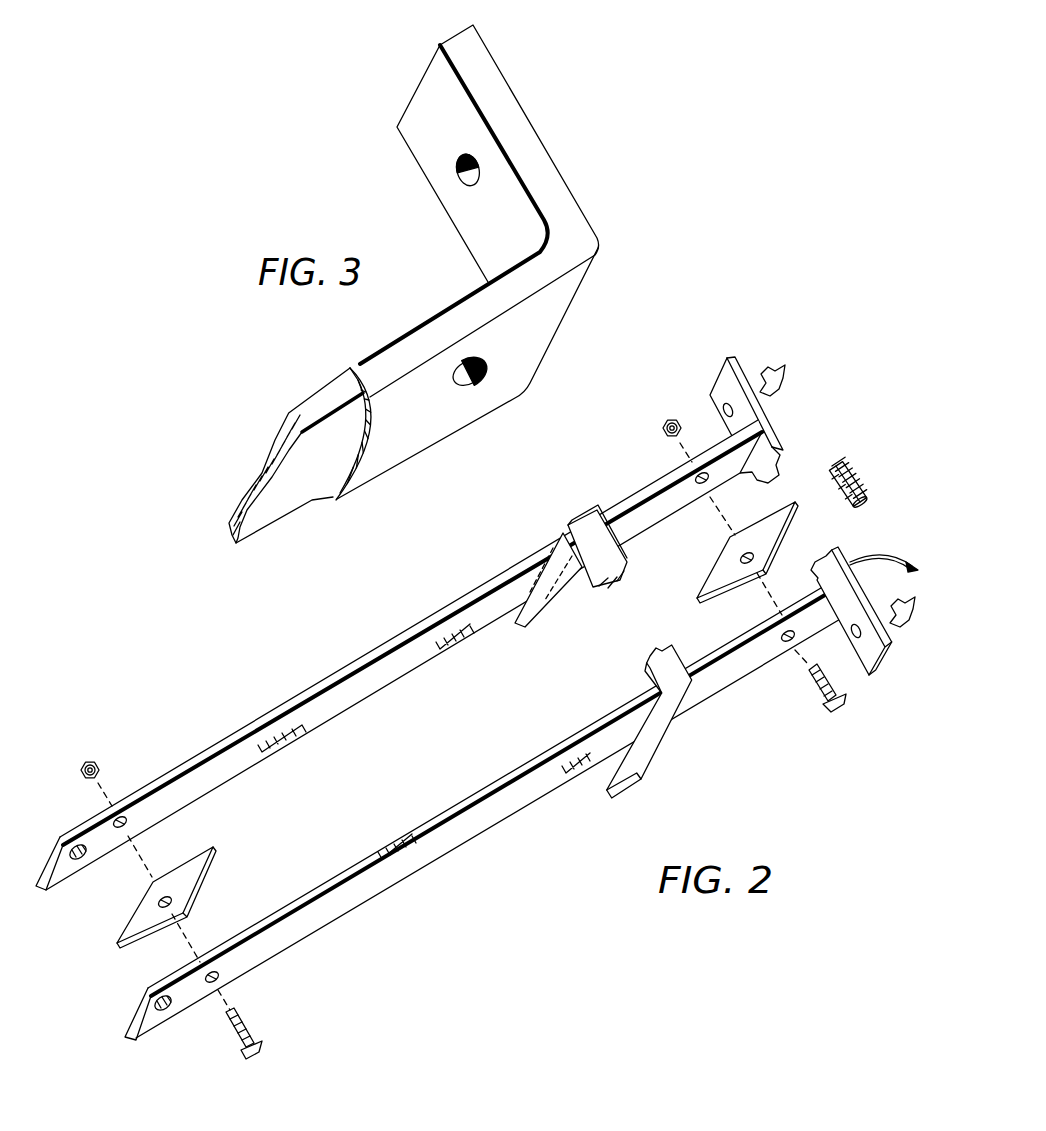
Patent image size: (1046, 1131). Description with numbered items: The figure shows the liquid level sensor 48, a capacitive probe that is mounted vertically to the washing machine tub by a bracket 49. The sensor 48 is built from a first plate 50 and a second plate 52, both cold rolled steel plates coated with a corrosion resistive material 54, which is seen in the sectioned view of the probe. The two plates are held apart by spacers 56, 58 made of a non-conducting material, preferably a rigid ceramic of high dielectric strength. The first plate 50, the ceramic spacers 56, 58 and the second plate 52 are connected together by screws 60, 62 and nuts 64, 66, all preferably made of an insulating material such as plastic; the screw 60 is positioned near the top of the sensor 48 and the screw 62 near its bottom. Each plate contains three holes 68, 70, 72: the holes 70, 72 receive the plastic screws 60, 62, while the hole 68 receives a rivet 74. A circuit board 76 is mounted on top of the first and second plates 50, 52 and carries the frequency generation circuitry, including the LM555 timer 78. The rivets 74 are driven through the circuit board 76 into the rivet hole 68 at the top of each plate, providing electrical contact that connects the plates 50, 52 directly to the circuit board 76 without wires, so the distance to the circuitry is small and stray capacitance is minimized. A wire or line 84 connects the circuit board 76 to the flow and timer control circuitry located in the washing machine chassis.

In FIG. 2, the liquid level sensor 48 is at (500, 865).
In FIG. 2, the bracket 49 is at (598, 585).
In FIG. 3, the first plate 50 is at (240, 530).
In FIG. 2, the first plate 50 is at (77, 860).
In FIG. 2, the second plate 52 is at (160, 1012).
In FIG. 3, the corrosion resistive material 54 is at (332, 502).
In FIG. 2, the spacer 56 is at (140, 930).
In FIG. 2, the spacer 58 is at (716, 588).
In FIG. 2, the screw 60 is at (840, 712).
In FIG. 2, the screw 62 is at (253, 1054).
In FIG. 2, the nut 64 is at (666, 430).
In FIG. 2, the nut 66 is at (80, 768).
In FIG. 3, the hole 68 is at (463, 178).
In FIG. 2, the hole 68 is at (724, 410).
In FIG. 3, the hole 70 is at (455, 378).
In FIG. 2, the hole 70 is at (700, 483).
In FIG. 2, the hole 72 is at (118, 830).
In FIG. 2, the rivet 74 is at (785, 370).
In FIG. 2, the circuit board 76 is at (780, 440).
In FIG. 2, the LM555 timer 78 is at (863, 478).
In FIG. 2, the wire or line 84 is at (897, 568).